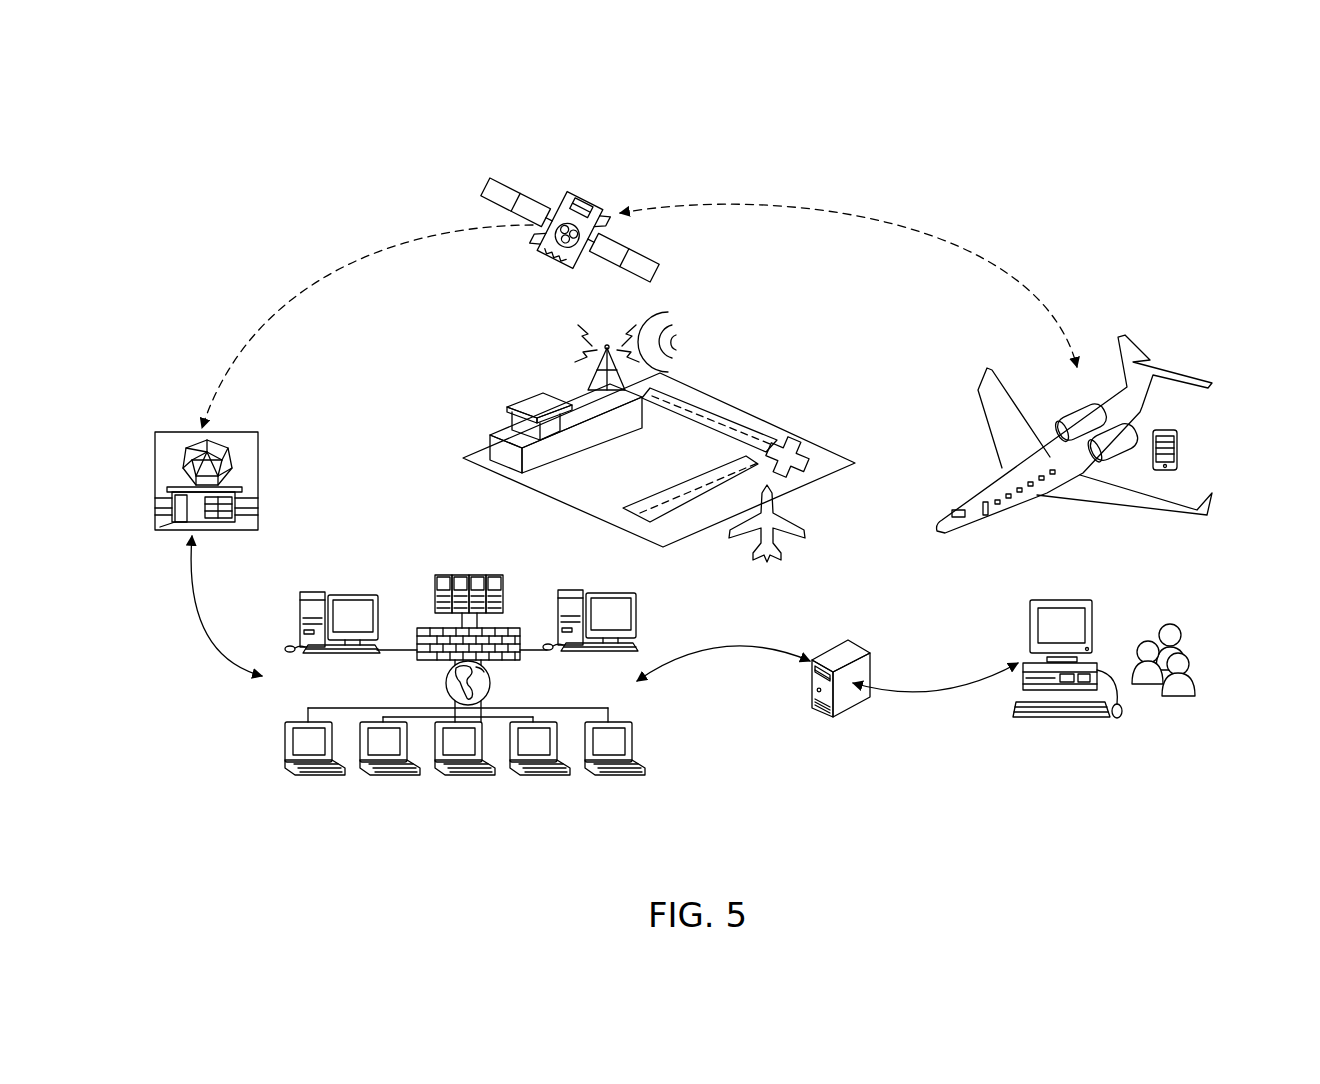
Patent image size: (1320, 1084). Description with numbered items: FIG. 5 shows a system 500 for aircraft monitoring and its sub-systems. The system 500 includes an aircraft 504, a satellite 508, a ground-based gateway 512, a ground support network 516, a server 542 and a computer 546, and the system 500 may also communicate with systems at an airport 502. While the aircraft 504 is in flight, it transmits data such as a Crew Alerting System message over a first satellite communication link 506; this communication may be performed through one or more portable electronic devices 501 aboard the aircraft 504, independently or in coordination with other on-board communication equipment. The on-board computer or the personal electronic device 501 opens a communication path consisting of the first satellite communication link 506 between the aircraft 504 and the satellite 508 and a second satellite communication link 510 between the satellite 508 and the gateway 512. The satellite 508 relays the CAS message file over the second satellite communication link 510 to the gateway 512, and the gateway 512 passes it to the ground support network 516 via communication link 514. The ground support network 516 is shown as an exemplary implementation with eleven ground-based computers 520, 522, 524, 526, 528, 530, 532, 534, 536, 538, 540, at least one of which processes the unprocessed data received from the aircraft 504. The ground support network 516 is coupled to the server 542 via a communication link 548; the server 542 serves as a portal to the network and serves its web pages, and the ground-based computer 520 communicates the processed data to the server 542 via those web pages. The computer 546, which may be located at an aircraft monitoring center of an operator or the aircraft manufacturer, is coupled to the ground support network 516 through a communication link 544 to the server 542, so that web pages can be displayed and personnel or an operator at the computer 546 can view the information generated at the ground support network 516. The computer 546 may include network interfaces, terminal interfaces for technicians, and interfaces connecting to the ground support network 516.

The system 500 is at (1062, 193).
The portable electronic device 501 is at (1177, 448).
The airport 502 is at (757, 404).
The aircraft 504 is at (1178, 373).
The first satellite communication link 506 is at (877, 218).
The satellite 508 is at (545, 193).
The second satellite communication link 510 is at (305, 283).
The gateway 512 is at (258, 480).
The communication link 514 is at (198, 590).
The ground support network 516 is at (270, 760).
The ground-based computer 520 is at (326, 778).
The ground-based computer 522 is at (401, 778).
The ground-based computer 524 is at (476, 778).
The ground-based computer 526 is at (551, 778).
The ground-based computer 528 is at (626, 778).
The ground-based computer 530 is at (312, 592).
The ground-based computer 532 is at (610, 591).
The ground-based computer 534 is at (435, 577).
The ground-based computer 536 is at (458, 575).
The ground-based computer 538 is at (478, 575).
The ground-based computer 540 is at (502, 578).
The server 542 is at (857, 640).
The communication link 544 is at (938, 688).
The computer 546 is at (1062, 600).
The communication link 548 is at (720, 653).